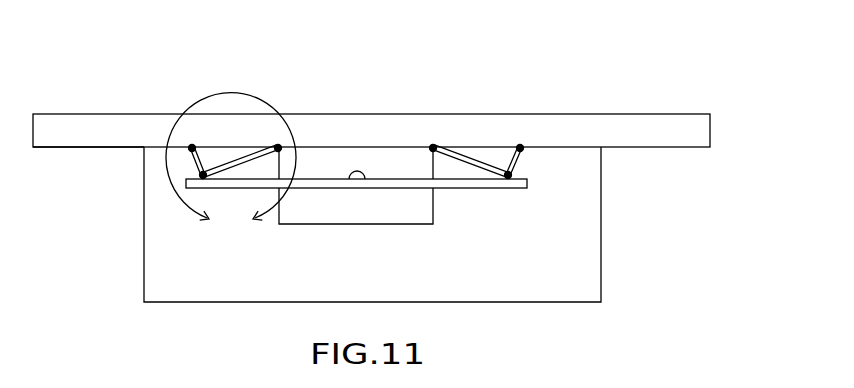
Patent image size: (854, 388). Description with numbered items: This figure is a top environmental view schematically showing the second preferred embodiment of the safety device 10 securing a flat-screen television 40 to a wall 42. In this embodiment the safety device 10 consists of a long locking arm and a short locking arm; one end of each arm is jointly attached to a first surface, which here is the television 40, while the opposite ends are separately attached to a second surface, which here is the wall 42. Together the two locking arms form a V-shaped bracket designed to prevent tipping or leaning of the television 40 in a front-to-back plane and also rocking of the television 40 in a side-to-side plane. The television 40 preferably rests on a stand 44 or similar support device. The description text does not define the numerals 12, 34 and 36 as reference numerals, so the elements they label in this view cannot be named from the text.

The safety device 10 is at (511, 176).
The link mechanism 12 is at (231, 161).
The support plate 34 is at (320, 183).
The underside surface of table 36 is at (98, 147).
The television 40 is at (447, 190).
The wall 42 is at (137, 114).
The stand 44 is at (292, 302).